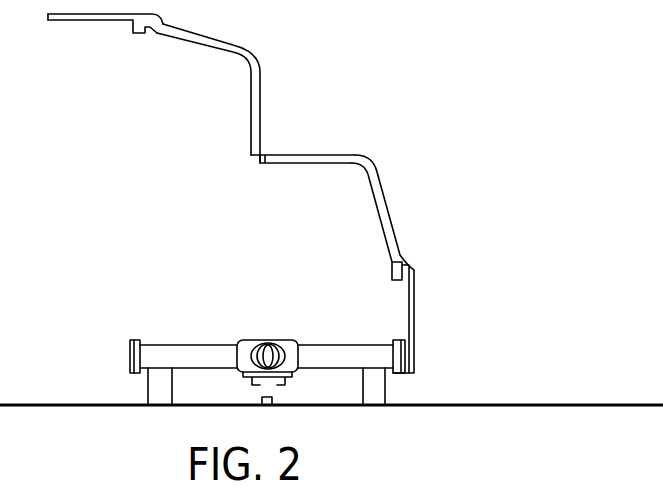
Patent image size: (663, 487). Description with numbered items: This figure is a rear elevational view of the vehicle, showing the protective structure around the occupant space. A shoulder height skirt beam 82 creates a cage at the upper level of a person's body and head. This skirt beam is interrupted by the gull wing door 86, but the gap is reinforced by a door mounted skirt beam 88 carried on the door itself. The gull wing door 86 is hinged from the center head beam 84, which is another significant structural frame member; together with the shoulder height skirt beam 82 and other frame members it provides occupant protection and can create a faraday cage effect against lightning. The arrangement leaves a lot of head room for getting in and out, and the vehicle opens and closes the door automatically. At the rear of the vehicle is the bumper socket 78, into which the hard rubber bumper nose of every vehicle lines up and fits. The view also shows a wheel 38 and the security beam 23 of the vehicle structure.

The door mounted skirt beam 88 is at (147, 33).
The gull wing door 86 is at (263, 107).
The center head beam 84 is at (265, 166).
The shoulder height skirt beam 82 is at (393, 275).
The rear vehicle bumper socket 78 is at (289, 345).
The wheel 38 is at (148, 392).
The security beam 23 is at (272, 399).